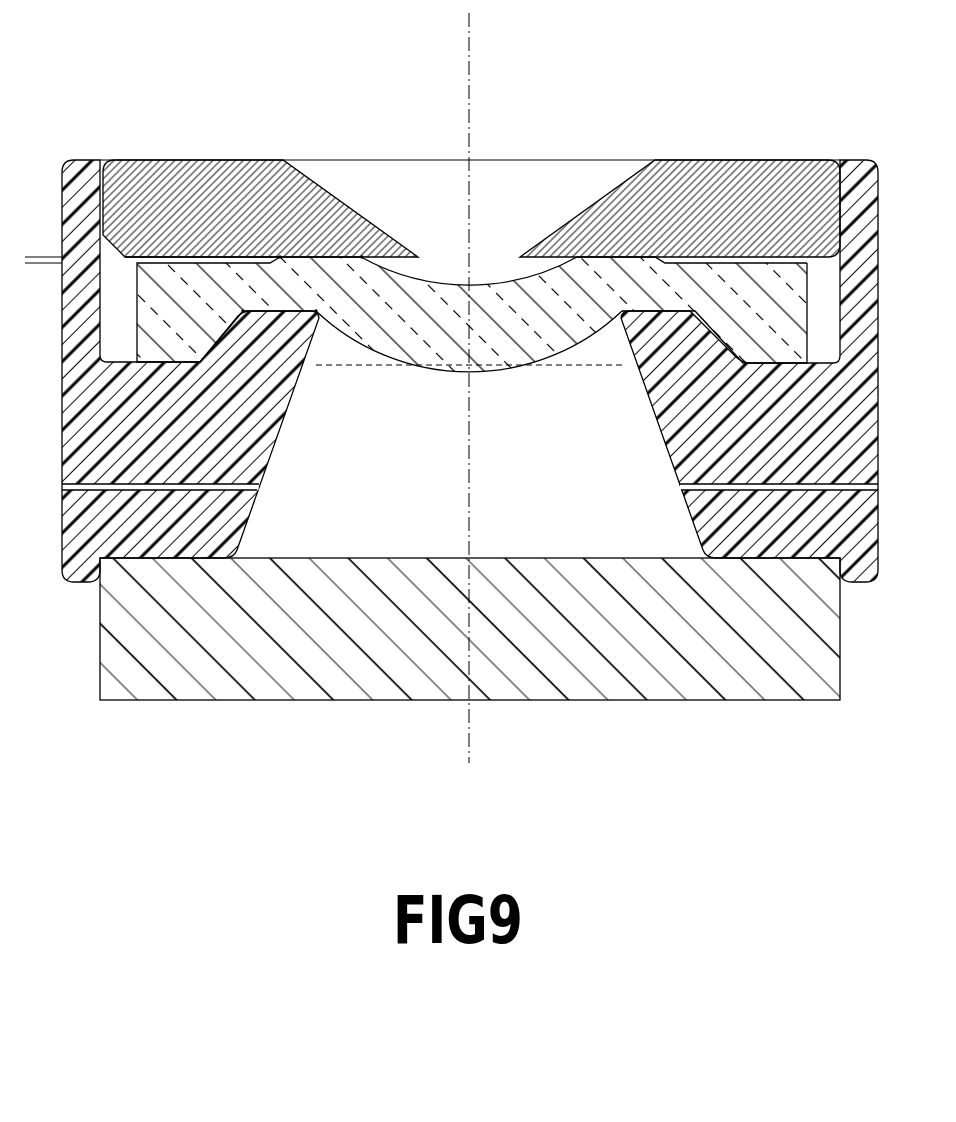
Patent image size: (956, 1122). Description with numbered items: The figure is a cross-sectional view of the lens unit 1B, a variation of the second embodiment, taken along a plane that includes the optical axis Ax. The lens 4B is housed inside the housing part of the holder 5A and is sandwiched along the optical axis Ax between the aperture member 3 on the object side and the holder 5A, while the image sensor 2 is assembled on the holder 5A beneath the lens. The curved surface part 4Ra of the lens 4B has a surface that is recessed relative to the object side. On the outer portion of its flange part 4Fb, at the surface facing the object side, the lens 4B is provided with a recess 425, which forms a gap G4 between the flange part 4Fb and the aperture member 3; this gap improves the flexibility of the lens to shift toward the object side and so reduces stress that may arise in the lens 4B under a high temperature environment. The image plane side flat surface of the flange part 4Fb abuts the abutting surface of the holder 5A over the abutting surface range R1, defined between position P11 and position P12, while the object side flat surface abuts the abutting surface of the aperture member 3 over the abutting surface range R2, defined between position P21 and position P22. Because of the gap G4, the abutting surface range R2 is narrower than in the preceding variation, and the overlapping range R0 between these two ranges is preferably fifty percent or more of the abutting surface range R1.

The lens unit 1B is at (678, 750).
The image sensor 2 is at (178, 645).
The aperture member 3 is at (736, 160).
The recess 425 is at (205, 257).
The lens 4B is at (137, 320).
The flange part 4Fb is at (199, 329).
The curved surface part 4Ra is at (522, 337).
The holder 5A is at (95, 467).
The optical axis Ax is at (469, 50).
The gap G4 is at (38, 263).
The position P11 is at (243, 311).
The position P12 is at (316, 311).
The position P21 is at (280, 257).
The position P22 is at (362, 257).
The overlapping range R0 is at (313, 290).
The abutting surface range R1 is at (243, 311).
The abutting surface range R2 is at (362, 154).